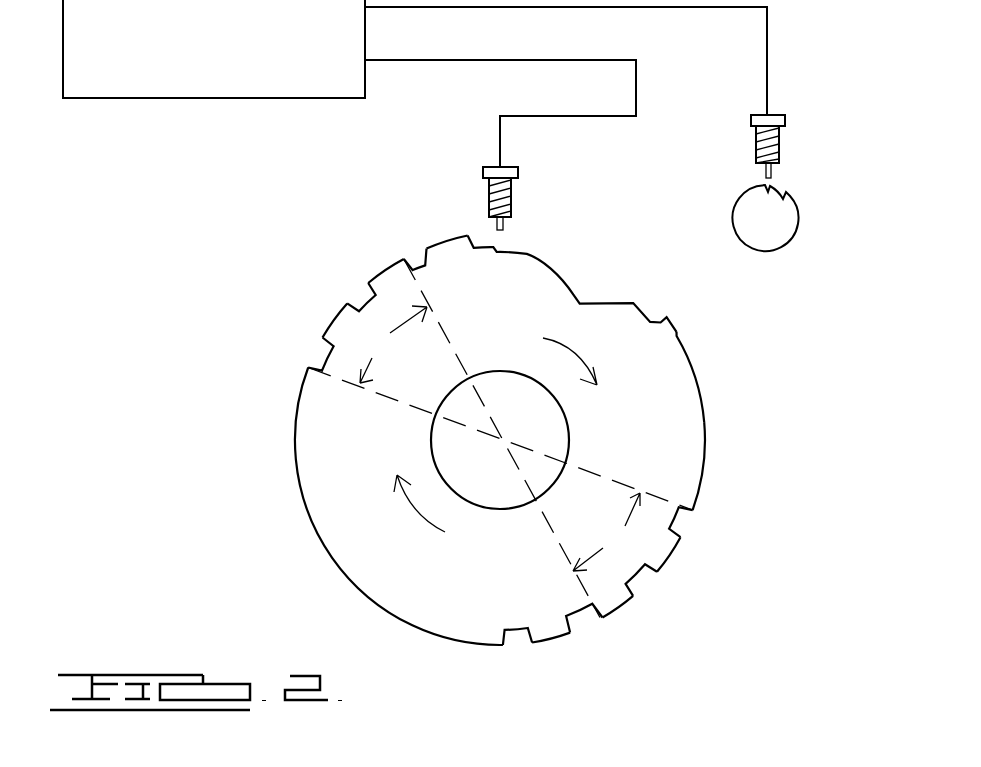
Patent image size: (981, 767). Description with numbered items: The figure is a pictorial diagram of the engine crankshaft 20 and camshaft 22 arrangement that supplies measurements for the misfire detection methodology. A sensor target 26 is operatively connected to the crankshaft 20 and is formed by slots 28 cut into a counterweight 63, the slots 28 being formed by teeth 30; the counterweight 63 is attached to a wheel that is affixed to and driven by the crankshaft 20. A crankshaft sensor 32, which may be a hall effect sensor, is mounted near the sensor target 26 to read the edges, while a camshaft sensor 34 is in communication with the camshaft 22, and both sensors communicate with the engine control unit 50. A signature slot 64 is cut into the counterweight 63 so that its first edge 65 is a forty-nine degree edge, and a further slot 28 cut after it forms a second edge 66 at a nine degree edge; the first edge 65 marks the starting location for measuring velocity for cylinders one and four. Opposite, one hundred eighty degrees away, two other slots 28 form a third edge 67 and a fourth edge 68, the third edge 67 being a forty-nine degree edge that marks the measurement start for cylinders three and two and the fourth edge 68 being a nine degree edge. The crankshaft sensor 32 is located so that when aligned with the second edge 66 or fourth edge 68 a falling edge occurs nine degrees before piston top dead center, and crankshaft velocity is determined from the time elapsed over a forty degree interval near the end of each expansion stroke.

The crankshaft 20 is at (490, 496).
The camshaft 22 is at (780, 238).
The sensor target 26 is at (478, 436).
The slots 28 is at (362, 303).
The teeth 30 is at (375, 276).
The crankshaft sensor 32 is at (510, 195).
The camshaft sensor 34 is at (788, 145).
The engine control unit 50 is at (200, 85).
The counterweight 63 is at (693, 368).
The signature slot 64 is at (575, 295).
The first edge 65 is at (403, 257).
The second edge 66 is at (308, 363).
The third edge 67 is at (602, 618).
The fourth edge 68 is at (693, 520).